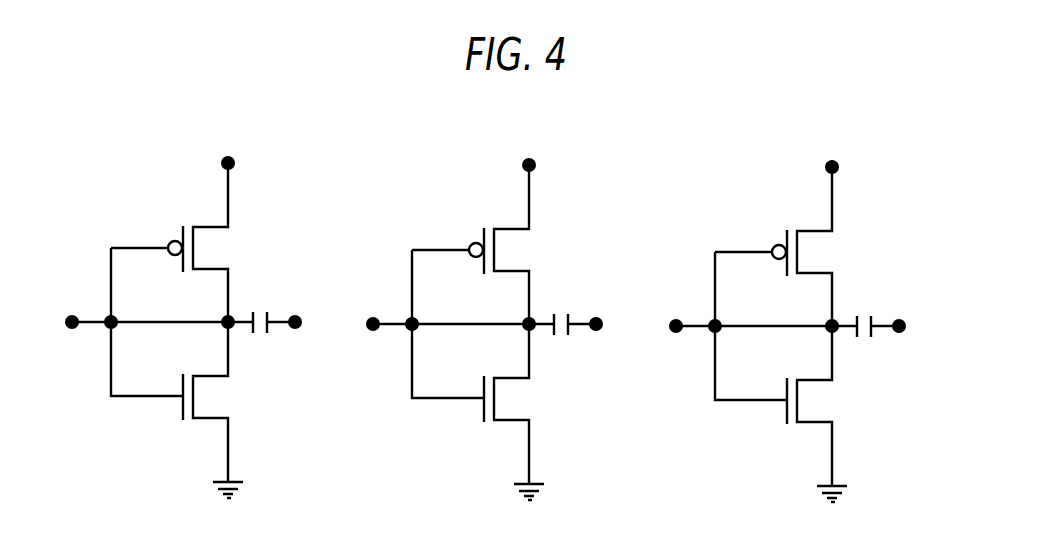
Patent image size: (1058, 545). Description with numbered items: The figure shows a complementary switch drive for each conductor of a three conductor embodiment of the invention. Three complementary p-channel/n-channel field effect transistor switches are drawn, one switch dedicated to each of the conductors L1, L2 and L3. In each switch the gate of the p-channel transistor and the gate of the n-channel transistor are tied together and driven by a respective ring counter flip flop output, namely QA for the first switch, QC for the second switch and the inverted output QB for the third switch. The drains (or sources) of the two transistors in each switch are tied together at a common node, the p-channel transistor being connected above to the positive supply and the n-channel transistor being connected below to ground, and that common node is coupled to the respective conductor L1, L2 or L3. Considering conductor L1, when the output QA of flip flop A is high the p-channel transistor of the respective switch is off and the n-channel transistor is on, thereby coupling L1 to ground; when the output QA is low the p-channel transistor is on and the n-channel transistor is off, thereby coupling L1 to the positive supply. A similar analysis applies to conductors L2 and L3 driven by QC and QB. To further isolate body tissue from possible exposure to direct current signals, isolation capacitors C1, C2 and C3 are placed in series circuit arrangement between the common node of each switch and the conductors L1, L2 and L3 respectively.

The ring counter flip flop output QA is at (146, 345).
The ring counter flip flop output QC is at (447, 347).
The inverted ring counter flip flop output QB-bar QB is at (750, 349).
The isolation capacitor C1 is at (261, 343).
The isolation capacitor C2 is at (562, 345).
The isolation capacitor C3 is at (865, 347).
The conductor L1 is at (309, 325).
The conductor L2 is at (610, 327).
The conductor L3 is at (913, 329).